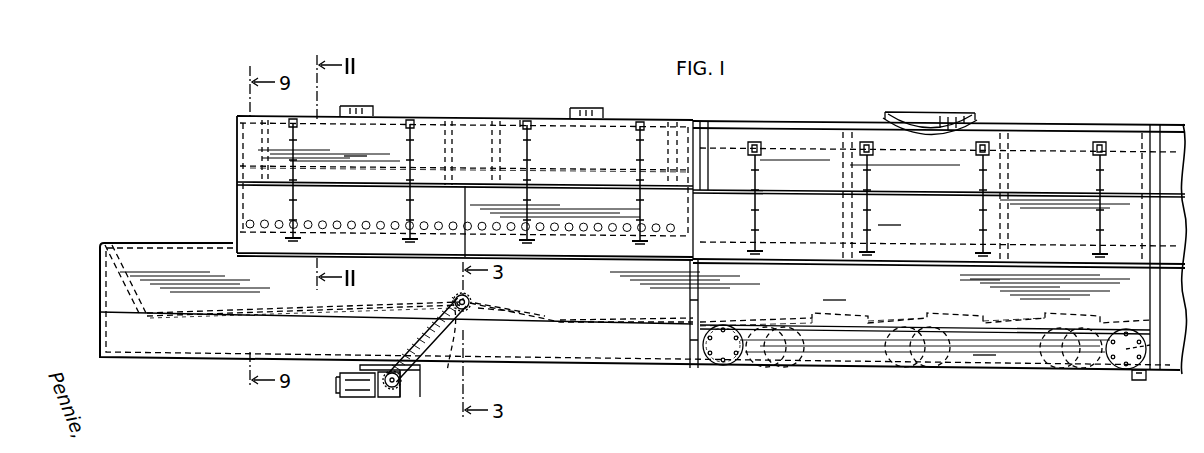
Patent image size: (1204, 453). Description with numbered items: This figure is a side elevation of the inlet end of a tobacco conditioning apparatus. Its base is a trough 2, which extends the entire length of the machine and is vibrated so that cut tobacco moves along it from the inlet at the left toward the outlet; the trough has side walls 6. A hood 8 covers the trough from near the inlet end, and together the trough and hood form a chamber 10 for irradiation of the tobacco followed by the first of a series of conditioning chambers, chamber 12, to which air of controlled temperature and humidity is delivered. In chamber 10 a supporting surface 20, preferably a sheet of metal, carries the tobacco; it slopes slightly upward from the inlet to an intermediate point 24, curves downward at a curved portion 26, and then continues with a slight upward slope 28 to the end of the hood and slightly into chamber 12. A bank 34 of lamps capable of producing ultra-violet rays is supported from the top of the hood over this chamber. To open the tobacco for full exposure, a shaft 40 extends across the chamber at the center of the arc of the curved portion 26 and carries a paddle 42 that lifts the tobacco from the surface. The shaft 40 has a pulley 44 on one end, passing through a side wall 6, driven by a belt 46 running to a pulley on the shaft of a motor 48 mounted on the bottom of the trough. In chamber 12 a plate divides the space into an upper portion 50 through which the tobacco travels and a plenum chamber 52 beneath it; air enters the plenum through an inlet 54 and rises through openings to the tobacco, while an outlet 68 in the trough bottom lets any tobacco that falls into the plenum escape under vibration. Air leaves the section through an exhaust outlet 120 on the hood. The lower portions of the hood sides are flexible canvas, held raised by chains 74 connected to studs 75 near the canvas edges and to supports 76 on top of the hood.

The trough 2 is at (172, 364).
The side walls 6 is at (862, 362).
The hood 8 is at (524, 112).
The chamber 10 is at (465, 183).
The chamber 12 is at (940, 247).
The supporting surface 20 is at (224, 320).
The intermediate point 24 is at (418, 294).
The curved portion 26 is at (447, 372).
The upward slope 28 is at (617, 324).
The bank of lamps 34 is at (353, 181).
The shaft 40 is at (469, 300).
The paddle 42 is at (495, 313).
The pulley 44 is at (455, 300).
The belt 46 is at (418, 345).
The motor 48 is at (358, 397).
The upper portion 50 is at (880, 313).
The plenum chamber 52 is at (925, 334).
The inlet 54 is at (773, 367).
The outlet 68 is at (1138, 381).
The chains 74 is at (625, 152).
The studs 75 is at (404, 242).
The supports 76 is at (410, 120).
The outlets 120 is at (921, 118).